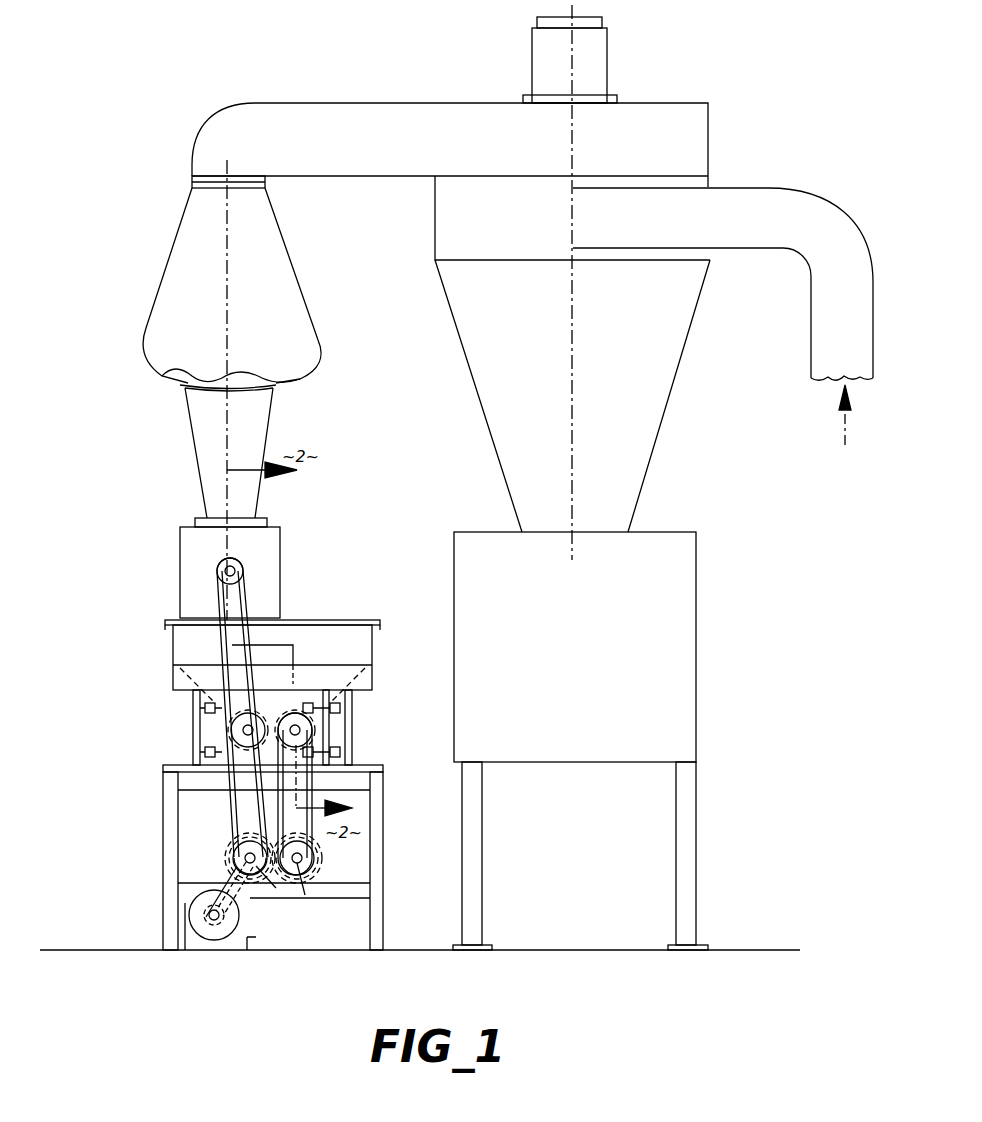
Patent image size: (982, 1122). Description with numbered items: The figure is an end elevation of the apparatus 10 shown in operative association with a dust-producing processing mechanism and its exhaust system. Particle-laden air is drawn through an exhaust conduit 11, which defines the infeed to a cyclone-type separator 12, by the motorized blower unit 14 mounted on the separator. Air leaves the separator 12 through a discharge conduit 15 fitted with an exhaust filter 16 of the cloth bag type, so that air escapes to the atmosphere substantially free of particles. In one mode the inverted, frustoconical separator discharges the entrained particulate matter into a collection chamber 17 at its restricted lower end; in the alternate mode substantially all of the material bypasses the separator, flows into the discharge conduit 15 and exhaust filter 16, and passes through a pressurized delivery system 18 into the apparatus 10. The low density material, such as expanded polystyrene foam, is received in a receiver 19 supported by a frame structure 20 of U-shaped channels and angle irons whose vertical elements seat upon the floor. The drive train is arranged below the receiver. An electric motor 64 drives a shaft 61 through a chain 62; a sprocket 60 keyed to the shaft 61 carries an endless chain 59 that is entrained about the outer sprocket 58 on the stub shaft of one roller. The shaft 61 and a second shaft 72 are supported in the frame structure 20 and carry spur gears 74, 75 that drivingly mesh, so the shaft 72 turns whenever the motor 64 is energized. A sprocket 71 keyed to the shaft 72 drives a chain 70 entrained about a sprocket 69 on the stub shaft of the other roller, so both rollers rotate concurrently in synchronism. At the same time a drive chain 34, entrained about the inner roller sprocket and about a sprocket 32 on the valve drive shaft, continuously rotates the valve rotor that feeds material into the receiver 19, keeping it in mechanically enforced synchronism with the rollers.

The apparatus 10 is at (150, 661).
The exhaust conduit 11 is at (811, 316).
The cyclone-type separator 12 is at (652, 447).
The motorized blower unit 14 is at (533, 53).
The discharge conduit 15 is at (326, 106).
The exhaust filter 16 is at (183, 257).
The collection chamber 17 is at (688, 612).
The pressurized delivery system 18 is at (197, 420).
The receiver 19 is at (175, 642).
The frame structure 20 is at (165, 834).
The sprocket 32 is at (218, 571).
The drive chain 34 is at (218, 586).
The outer sprocket 58 is at (235, 738).
The endless chain 59 is at (232, 812).
The sprocket 60 is at (240, 860).
The shaft 61 is at (262, 870).
The chain 62 is at (250, 898).
The electric motor 64 is at (210, 940).
The sprocket 69 is at (303, 740).
The chain 70 is at (313, 778).
The sprocket 71 is at (303, 852).
The shaft 72 is at (299, 864).
The spur gear 74 is at (232, 840).
The spur gear 75 is at (314, 866).